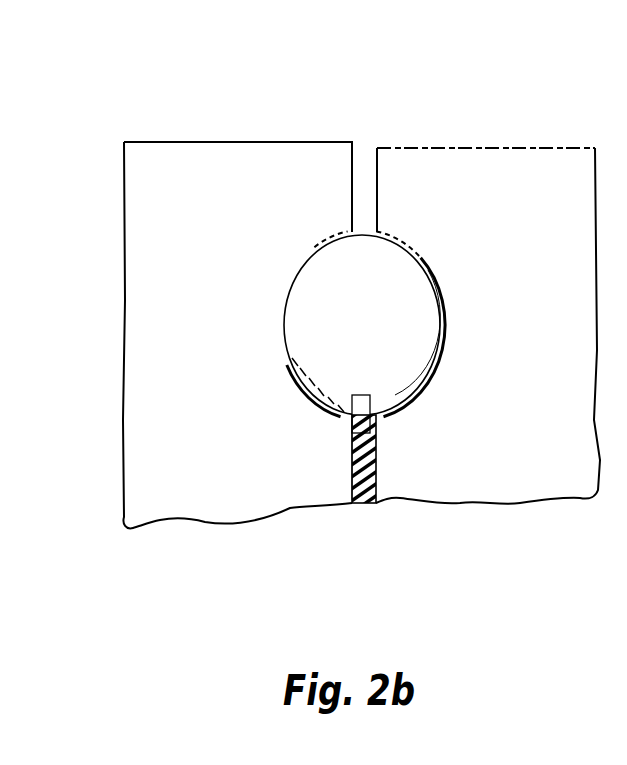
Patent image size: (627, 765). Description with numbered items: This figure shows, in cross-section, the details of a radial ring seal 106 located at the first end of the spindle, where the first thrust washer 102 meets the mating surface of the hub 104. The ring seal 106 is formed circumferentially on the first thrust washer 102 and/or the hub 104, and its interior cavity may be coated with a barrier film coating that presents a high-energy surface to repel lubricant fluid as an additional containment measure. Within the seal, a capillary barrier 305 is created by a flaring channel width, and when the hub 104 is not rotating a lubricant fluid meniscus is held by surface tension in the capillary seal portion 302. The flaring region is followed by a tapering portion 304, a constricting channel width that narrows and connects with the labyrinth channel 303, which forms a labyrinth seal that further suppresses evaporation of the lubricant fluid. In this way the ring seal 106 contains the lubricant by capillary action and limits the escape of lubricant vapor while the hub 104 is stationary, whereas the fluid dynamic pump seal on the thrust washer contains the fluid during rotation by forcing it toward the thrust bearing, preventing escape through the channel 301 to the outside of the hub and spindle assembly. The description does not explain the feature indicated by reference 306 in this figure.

The first thrust washer 102 is at (562, 462).
The hub 104 is at (186, 492).
The ring seal 106 is at (338, 306).
The channel 301 is at (363, 155).
The capillary seal portion 302 is at (357, 508).
The labyrinth channel 303 is at (310, 158).
The tapering portion 304 is at (287, 362).
The capillary barrier 305 is at (360, 430).
The interface lines 306 is at (317, 480).